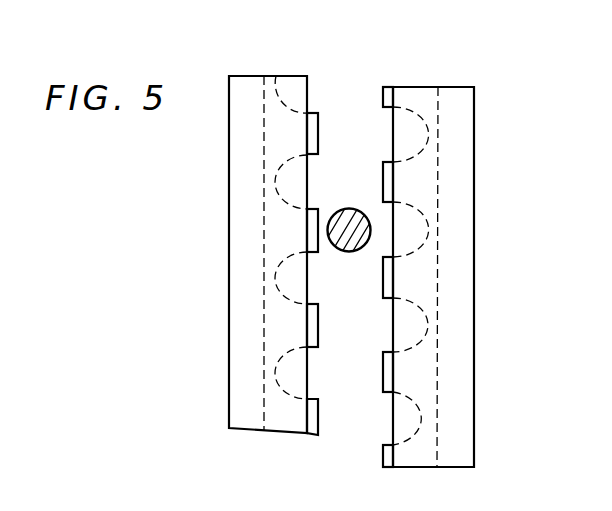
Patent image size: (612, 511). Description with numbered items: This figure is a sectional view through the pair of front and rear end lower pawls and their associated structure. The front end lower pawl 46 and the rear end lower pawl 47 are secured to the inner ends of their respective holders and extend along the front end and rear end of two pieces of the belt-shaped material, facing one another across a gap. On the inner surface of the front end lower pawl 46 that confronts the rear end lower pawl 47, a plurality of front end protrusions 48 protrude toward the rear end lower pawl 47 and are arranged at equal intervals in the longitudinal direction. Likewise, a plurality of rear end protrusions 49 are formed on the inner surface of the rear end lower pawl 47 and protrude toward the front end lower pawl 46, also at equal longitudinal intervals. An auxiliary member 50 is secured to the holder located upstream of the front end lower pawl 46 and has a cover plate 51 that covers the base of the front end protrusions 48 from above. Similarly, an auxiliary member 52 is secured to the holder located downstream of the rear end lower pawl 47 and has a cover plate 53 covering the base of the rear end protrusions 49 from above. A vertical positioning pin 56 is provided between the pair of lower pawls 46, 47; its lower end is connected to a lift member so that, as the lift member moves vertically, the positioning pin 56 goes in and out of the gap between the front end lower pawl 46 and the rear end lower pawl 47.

The front end lower pawl 46 is at (440, 102).
The rear end lower pawl 47 is at (263, 88).
The front end protrusions 48 is at (383, 170).
The rear end protrusions 49 is at (319, 130).
The auxiliary member 50 is at (467, 260).
The cover plate 51 is at (414, 90).
The auxiliary member 52 is at (231, 170).
The cover plate 53 is at (296, 85).
The vertical positioning pin 56 is at (348, 208).